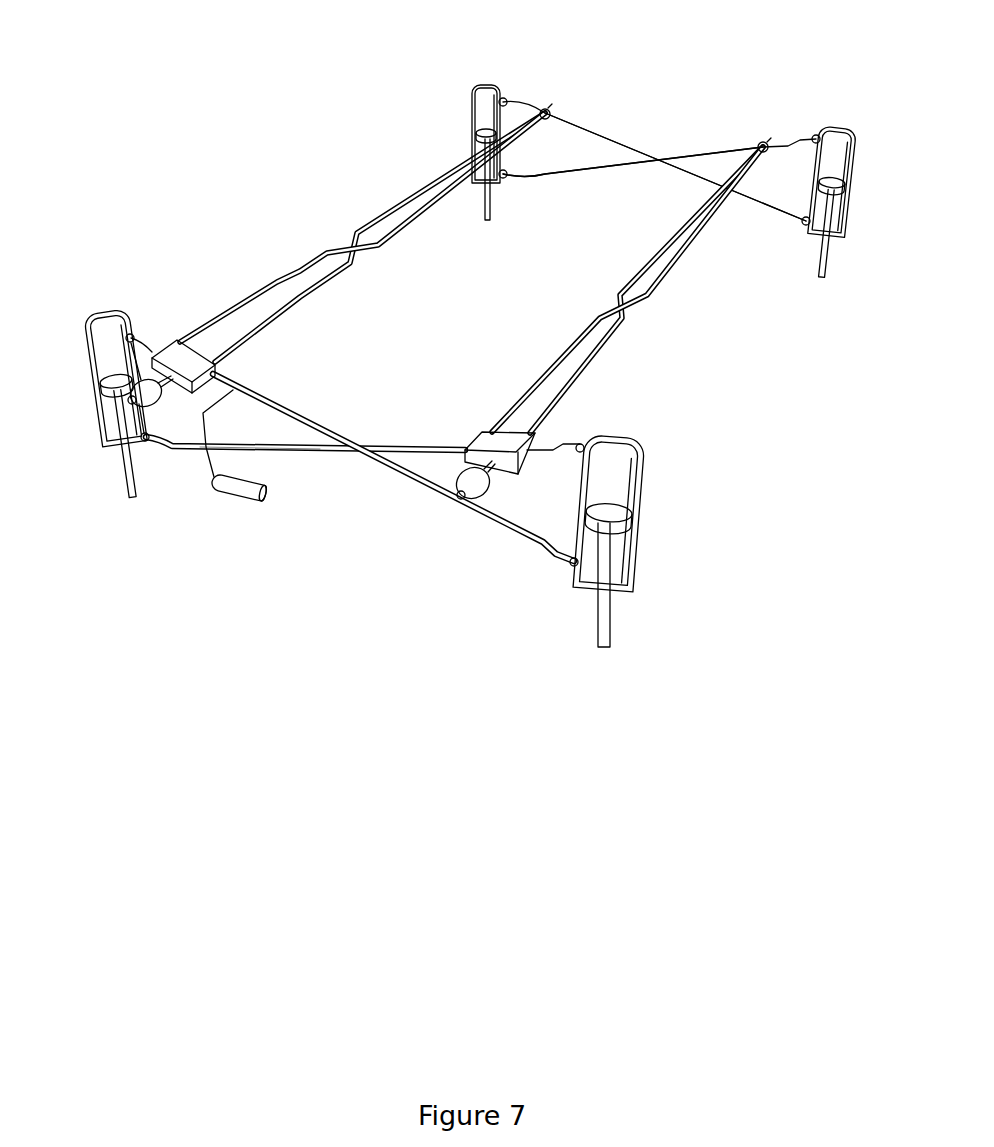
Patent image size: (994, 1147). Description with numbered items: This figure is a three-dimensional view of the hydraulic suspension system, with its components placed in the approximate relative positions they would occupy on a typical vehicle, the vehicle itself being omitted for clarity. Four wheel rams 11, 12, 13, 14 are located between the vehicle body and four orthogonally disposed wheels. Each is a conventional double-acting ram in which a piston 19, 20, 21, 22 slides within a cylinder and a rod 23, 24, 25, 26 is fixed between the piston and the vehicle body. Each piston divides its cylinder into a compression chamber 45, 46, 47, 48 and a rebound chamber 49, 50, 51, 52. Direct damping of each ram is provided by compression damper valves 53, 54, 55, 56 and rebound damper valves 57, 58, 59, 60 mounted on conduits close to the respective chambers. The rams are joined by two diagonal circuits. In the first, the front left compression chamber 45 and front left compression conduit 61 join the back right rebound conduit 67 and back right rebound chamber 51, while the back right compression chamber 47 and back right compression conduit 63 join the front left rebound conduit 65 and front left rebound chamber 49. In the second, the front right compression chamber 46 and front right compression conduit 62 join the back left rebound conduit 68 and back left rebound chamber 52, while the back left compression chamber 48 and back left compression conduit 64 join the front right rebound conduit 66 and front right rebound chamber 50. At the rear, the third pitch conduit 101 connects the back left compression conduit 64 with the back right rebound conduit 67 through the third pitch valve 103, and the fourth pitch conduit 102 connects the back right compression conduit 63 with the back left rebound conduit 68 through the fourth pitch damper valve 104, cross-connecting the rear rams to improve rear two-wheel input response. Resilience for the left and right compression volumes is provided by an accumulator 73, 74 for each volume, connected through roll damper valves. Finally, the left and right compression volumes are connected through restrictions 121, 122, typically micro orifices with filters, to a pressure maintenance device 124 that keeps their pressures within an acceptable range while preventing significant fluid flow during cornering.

The wheel ram 11 is at (644, 548).
The wheel ram 12 is at (104, 409).
The wheel ram 13 is at (477, 137).
The wheel ram 14 is at (830, 194).
The piston 19 is at (608, 519).
The piston 20 is at (116, 386).
The piston 21 is at (456, 130).
The piston 22 is at (832, 186).
The rod 23 is at (608, 628).
The rod 24 is at (125, 444).
The rod 25 is at (465, 196).
The rod 26 is at (827, 233).
The compression chamber 45 is at (609, 513).
The compression chamber 46 is at (116, 378).
The compression chamber 47 is at (457, 133).
The compression chamber 48 is at (832, 181).
The rebound chamber 49 is at (609, 513).
The rebound chamber 50 is at (115, 377).
The rebound chamber 51 is at (457, 134).
The rebound chamber 52 is at (832, 181).
The compression damper valve 53 is at (580, 445).
The compression damper valve 54 is at (131, 332).
The compression damper valve 55 is at (508, 68).
The compression damper valve 56 is at (817, 136).
The rebound damper valve 57 is at (572, 568).
The rebound damper valve 58 is at (148, 444).
The rebound damper valve 59 is at (519, 202).
The rebound damper valve 60 is at (800, 223).
The front left compression conduit 61 is at (548, 442).
The front right compression conduit 62 is at (151, 345).
The back right compression conduit 63 is at (522, 106).
The back left compression conduit 64 is at (785, 145).
The front left rebound conduit 65 is at (384, 462).
The front right rebound conduit 66 is at (307, 451).
The back right rebound conduit 67 is at (558, 170).
The back left rebound conduit 68 is at (667, 164).
The accumulator 73 is at (483, 491).
The accumulator 74 is at (150, 401).
The third pitch conduit 101 is at (597, 134).
The fourth pitch conduit 102 is at (702, 151).
The third pitch valve 103 is at (548, 111).
The fourth pitch damper valve 104 is at (758, 144).
The restriction 121 is at (229, 454).
The restriction 122 is at (216, 404).
The pressure maintenance device 124 is at (252, 499).